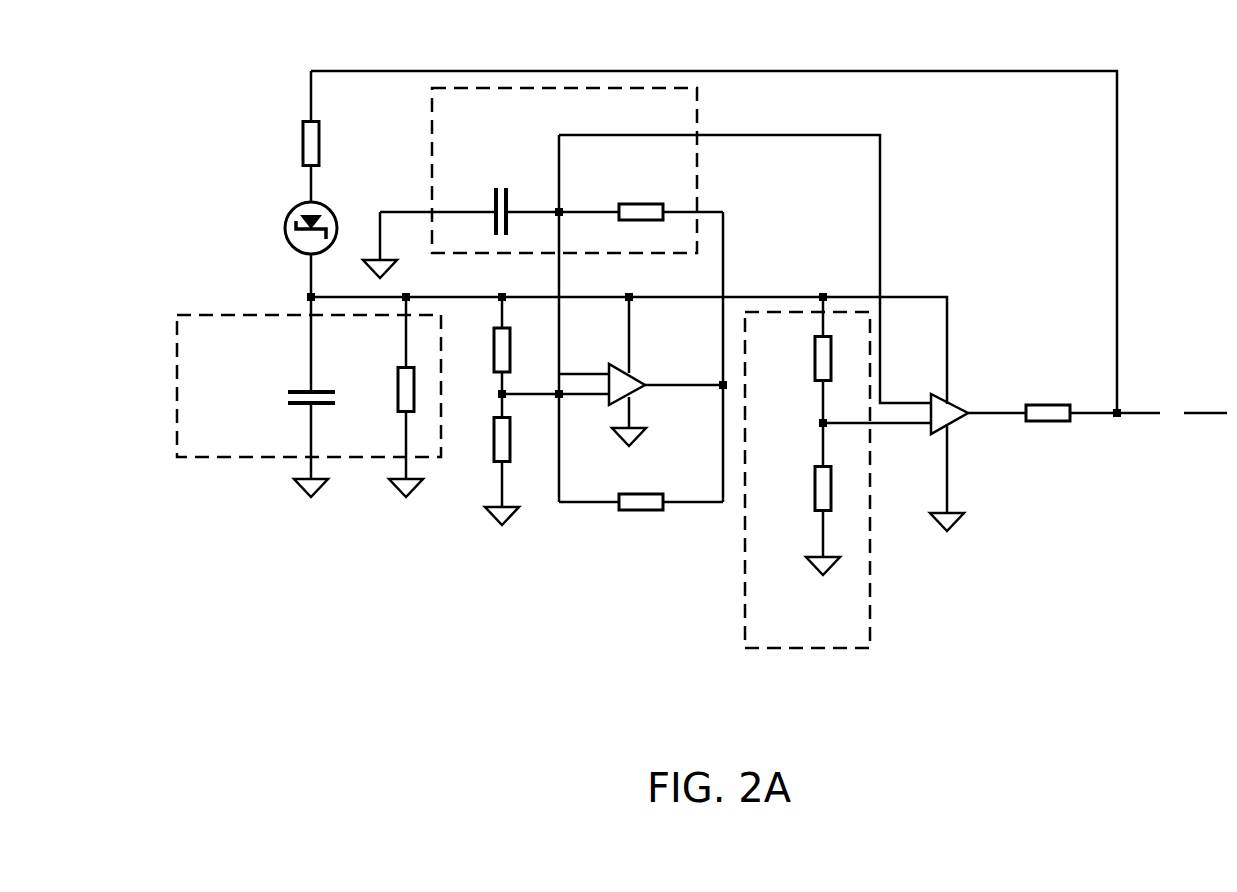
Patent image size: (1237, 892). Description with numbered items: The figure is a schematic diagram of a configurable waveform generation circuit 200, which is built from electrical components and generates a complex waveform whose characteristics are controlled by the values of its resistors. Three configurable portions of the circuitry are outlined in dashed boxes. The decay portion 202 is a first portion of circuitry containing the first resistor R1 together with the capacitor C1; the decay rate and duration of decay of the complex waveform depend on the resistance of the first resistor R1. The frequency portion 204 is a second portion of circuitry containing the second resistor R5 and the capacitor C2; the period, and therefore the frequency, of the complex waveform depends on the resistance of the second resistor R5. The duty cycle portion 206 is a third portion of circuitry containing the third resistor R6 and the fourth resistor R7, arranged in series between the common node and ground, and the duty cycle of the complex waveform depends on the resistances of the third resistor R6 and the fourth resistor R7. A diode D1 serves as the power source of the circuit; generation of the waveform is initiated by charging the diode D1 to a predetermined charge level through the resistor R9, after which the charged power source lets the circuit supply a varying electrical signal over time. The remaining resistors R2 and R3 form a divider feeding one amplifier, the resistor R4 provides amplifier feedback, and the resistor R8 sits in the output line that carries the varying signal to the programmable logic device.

The configurable waveform generation circuit 200 is at (405, 585).
The decay portion 202 is at (309, 386).
The frequency portion 204 is at (564, 170).
The duty cycle portion 206 is at (807, 480).
The first resistor R1 is at (386, 390).
The resistor R2 is at (481, 350).
The resistor R3 is at (481, 440).
The resistor R4 is at (641, 518).
The second resistor R5 is at (641, 228).
The third resistor R6 is at (804, 359).
The fourth resistor R7 is at (804, 489).
The resistor R8 is at (1048, 429).
The resistor R9 is at (291, 144).
The capacitor C1 is at (296, 398).
The capacitor C2 is at (500, 200).
The diode D1 is at (293, 228).